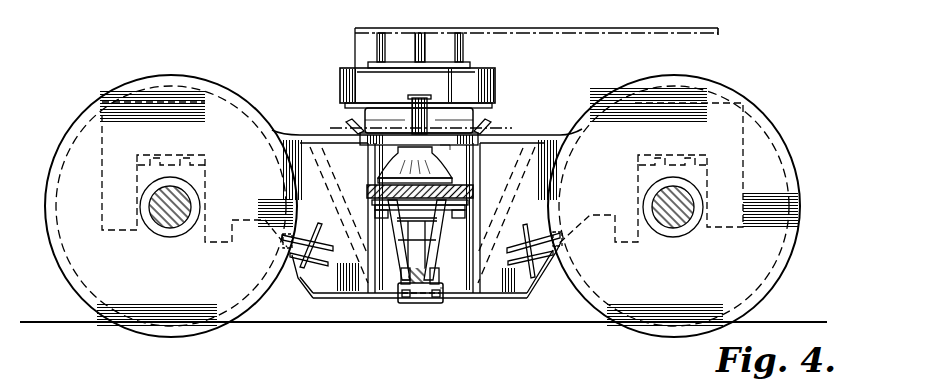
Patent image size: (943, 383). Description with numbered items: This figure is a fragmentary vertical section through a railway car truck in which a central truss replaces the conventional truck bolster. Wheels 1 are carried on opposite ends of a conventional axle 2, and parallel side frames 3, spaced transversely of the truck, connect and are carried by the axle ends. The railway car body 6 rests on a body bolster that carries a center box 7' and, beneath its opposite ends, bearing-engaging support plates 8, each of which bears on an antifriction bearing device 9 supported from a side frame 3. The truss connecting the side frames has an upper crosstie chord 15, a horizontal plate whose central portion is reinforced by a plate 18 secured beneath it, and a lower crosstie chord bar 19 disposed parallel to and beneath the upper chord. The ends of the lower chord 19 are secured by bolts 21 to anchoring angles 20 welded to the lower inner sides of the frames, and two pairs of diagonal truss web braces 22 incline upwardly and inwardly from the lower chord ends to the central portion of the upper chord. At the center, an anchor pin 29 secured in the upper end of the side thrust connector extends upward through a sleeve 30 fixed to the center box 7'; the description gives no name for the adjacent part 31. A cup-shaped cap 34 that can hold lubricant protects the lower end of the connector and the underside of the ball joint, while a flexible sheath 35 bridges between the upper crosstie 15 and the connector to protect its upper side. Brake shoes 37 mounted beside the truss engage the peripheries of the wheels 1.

The wheels 1 is at (106, 103).
The axle 2 is at (160, 207).
The side frame 3 is at (294, 126).
The railway car body 6 is at (603, 30).
The center box 7' is at (391, 50).
The bearing-engaging support plate 8 is at (357, 90).
The antifriction bearing device 9 is at (475, 113).
The upper crosstie chord 15 is at (368, 192).
The reinforcing plate 18 is at (470, 205).
The lower crosstie chord bar 19 is at (395, 283).
The anchoring angle 20 is at (430, 300).
The bolts 21 is at (403, 300).
The diagonal truss web brace 22 is at (385, 235).
The anchor pin 29 is at (417, 97).
The sleeve 30 is at (400, 125).
The bolster member right 31 is at (455, 107).
The cap 34 is at (445, 290).
The flexible sheath 35 is at (447, 163).
The brake shoe 37 is at (292, 252).